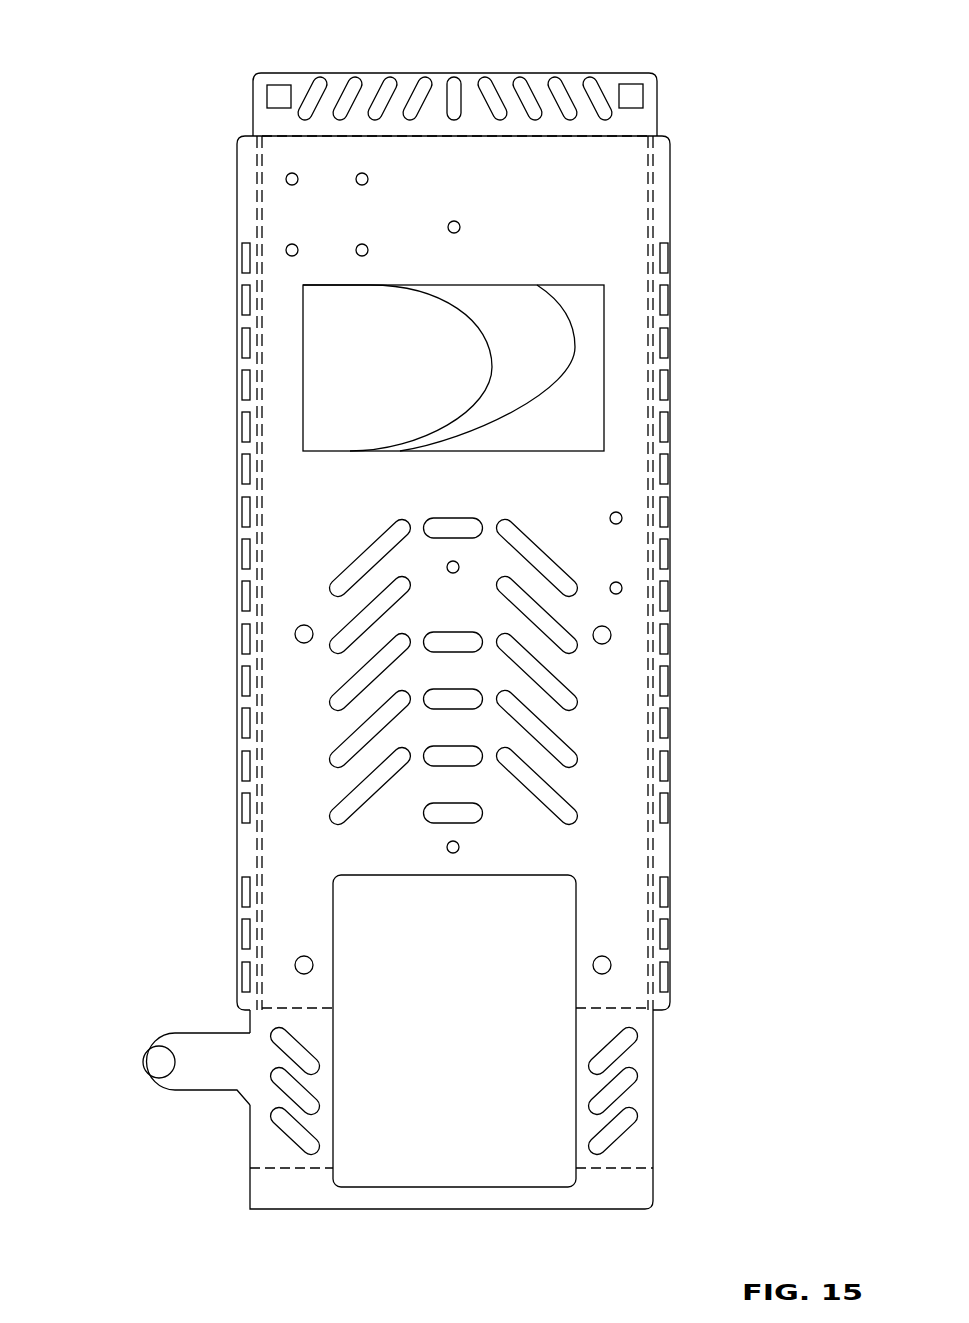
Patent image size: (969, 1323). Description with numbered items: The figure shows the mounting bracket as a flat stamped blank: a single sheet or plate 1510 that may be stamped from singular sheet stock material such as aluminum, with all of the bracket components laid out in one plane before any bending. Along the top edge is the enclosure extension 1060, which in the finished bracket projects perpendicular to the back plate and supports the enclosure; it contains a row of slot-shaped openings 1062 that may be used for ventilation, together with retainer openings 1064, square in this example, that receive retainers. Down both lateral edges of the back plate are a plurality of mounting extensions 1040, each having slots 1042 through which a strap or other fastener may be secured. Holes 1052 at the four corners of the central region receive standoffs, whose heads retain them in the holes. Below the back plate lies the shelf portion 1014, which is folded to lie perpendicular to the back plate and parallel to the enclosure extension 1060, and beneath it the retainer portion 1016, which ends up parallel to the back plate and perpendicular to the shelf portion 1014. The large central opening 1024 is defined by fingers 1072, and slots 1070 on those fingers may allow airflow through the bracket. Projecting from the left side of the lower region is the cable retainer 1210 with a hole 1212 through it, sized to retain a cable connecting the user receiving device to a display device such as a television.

The plate 1510 is at (147, 145).
The enclosure extension 1060 is at (657, 105).
The openings 1062 is at (324, 82).
The retainer openings 1064 is at (279, 88).
The mounting extensions 1040 is at (240, 258).
The slots 1042 is at (250, 592).
The holes 1052 is at (300, 640).
The shelf portion 1014 is at (653, 1127).
The fingers 1072 is at (653, 1027).
The retainer portion 1016 is at (635, 1203).
The slots 1070 is at (280, 1040).
The opening 1024 is at (477, 1043).
The cable retainer 1210 is at (190, 1073).
The hole 1212 is at (150, 1068).